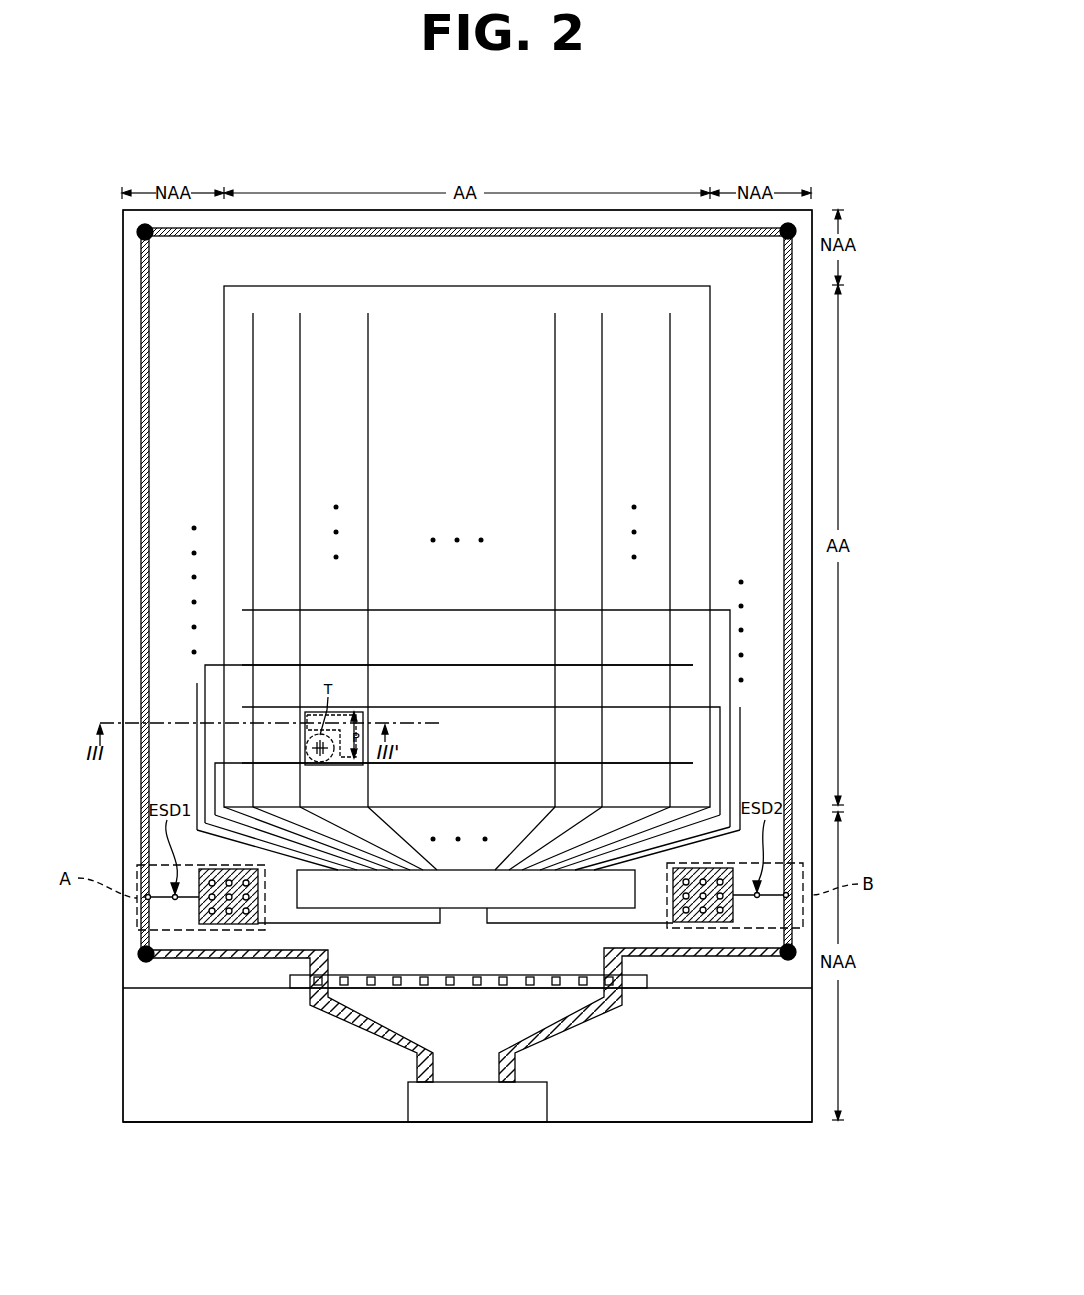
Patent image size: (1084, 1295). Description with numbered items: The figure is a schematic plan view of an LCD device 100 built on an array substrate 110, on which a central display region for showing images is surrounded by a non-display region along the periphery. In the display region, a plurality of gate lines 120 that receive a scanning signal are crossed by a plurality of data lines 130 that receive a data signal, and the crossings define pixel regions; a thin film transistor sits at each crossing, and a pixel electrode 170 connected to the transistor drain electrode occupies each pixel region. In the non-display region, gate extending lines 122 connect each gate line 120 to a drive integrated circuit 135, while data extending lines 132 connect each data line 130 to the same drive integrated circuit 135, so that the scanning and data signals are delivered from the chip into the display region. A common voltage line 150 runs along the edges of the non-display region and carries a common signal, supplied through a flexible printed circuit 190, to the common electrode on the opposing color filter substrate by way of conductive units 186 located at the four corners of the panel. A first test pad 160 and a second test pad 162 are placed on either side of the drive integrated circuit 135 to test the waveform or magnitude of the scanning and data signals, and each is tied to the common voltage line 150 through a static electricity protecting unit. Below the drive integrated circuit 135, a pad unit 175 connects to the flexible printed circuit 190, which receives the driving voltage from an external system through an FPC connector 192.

The LCD device 100 is at (778, 148).
The array substrate 110 is at (812, 400).
The gate lines 120 is at (475, 762).
The gate extending lines 122 is at (193, 770).
The data lines 130 is at (368, 684).
The data extending lines 132 is at (403, 835).
The drive integrated circuit 135 is at (457, 897).
The common voltage line 150 is at (792, 441).
The first test pad 160 is at (200, 918).
The second test pad 162 is at (780, 915).
The pixel electrode 170 is at (358, 760).
The pad unit 175 is at (464, 989).
The conductive units 186 is at (795, 226).
The flexible printed circuit 190 is at (788, 1062).
The FPC connector 192 is at (480, 1110).